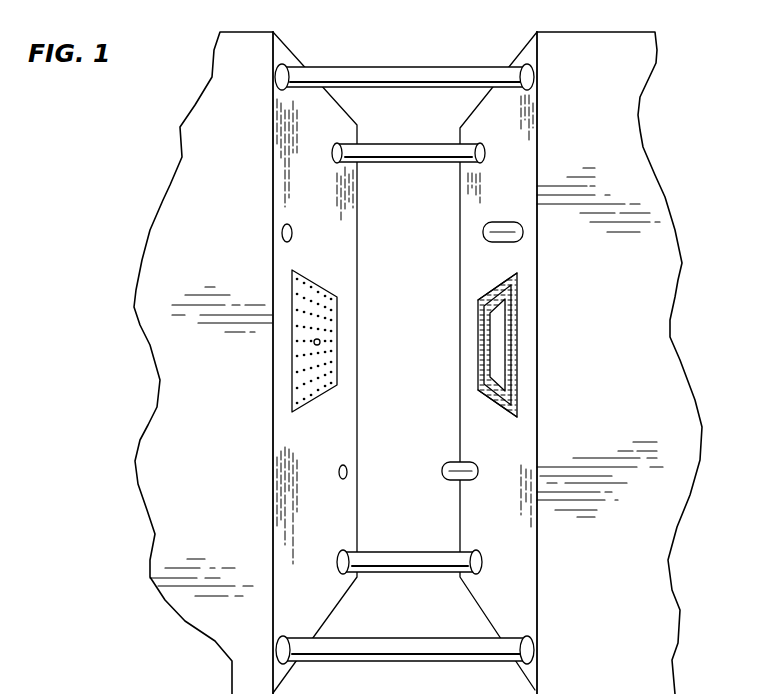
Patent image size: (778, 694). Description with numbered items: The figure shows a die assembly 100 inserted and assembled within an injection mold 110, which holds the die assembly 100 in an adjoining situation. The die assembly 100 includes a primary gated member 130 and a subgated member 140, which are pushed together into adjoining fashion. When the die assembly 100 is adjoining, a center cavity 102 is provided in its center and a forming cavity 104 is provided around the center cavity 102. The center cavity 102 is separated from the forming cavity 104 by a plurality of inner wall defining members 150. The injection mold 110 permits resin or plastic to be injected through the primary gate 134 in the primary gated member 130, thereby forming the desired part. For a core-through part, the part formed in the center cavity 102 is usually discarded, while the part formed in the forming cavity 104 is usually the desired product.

The die assembly 100 is at (477, 372).
The center cavity 102 is at (492, 333).
The forming cavity 104 is at (471, 304).
The injection mold 110 is at (142, 389).
The primary gated member 130 is at (325, 327).
The primary gate 134 is at (316, 344).
The subgated member 140 is at (467, 356).
The inner wall defining members 150 is at (517, 360).